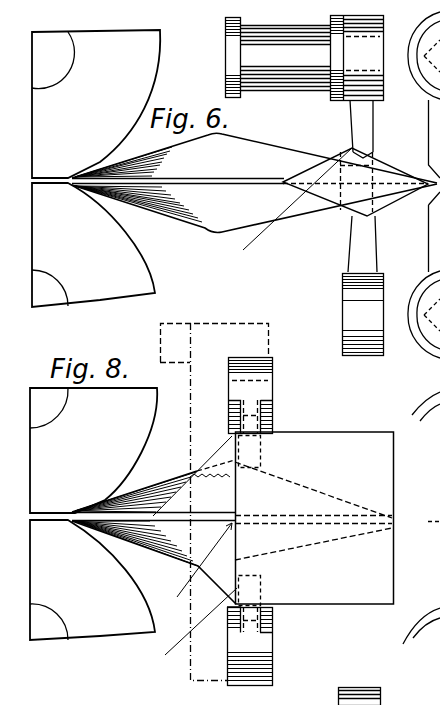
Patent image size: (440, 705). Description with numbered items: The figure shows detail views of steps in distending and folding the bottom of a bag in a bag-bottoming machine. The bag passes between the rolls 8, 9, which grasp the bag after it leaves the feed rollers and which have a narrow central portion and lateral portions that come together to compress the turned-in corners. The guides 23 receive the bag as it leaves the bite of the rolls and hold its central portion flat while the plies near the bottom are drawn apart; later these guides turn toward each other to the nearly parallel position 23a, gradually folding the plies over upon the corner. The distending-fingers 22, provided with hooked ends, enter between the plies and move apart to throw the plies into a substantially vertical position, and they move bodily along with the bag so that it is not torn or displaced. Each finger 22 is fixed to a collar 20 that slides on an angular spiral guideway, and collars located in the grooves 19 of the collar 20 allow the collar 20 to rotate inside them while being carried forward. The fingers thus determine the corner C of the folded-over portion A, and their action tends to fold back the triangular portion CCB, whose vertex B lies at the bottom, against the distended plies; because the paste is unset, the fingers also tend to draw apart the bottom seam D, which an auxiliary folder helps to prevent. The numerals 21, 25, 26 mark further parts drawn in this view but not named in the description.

In FIG. 6, the roll 8 is at (96, 104).
In FIG. 8, the roll 8 is at (93, 450).
In FIG. 6, the roll 9 is at (93, 245).
In FIG. 8, the roll 9 is at (92, 580).
In FIG. 6, the groove 19 is at (277, 58).
In FIG. 6, the collar 20 is at (330, 88).
In FIG. 6, the hub 21 is at (367, 48).
In FIG. 8, the hub 21 is at (255, 395).
In FIG. 6, the distending-finger 22 is at (358, 132).
In FIG. 8, the distending-finger 22 is at (250, 456).
In FIG. 6, the guide 23 is at (254, 182).
In FIG. 8, the guides in nearly parallel position 23a is at (122, 490).
In FIG. 8, the dashed outline 25 is at (214, 343).
In FIG. 8, the dashed outline 26 is at (205, 651).
In FIG. 6, the folded-over portion A is at (287, 207).
In FIG. 8, the folded-over portion A is at (195, 564).
In FIG. 8, the apex of triangular portion B is at (150, 492).
In FIG. 8, the corner of folded-over portion C is at (232, 440).
In FIG. 8, the bottom seam D is at (197, 470).